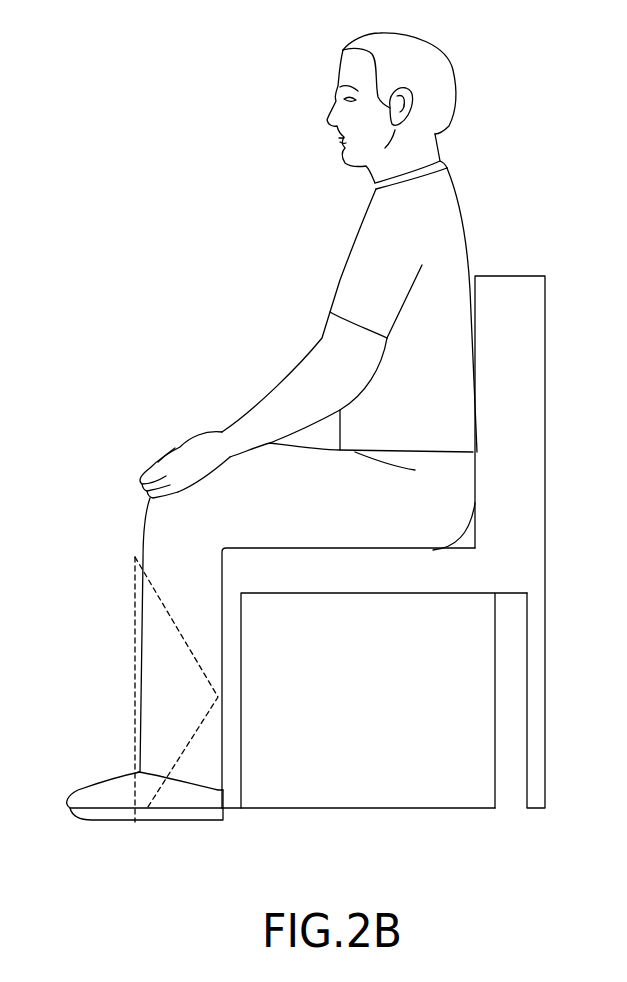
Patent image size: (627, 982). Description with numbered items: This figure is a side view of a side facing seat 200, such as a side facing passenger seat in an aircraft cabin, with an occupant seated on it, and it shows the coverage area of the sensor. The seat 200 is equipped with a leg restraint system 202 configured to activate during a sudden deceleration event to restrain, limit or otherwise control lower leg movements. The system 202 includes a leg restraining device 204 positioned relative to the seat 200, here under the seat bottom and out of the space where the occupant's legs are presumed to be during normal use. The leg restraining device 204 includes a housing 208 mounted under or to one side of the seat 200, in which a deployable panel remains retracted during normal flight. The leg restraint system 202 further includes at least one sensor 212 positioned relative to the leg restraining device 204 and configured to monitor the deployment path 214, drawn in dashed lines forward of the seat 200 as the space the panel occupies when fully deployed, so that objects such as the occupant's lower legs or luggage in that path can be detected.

The side facing seat 200 is at (510, 276).
The leg restraint system 202 is at (350, 832).
The leg restraining device 204 is at (386, 808).
The housing 208 is at (460, 792).
The sensor 212 is at (203, 722).
The deployment path 214 is at (135, 821).